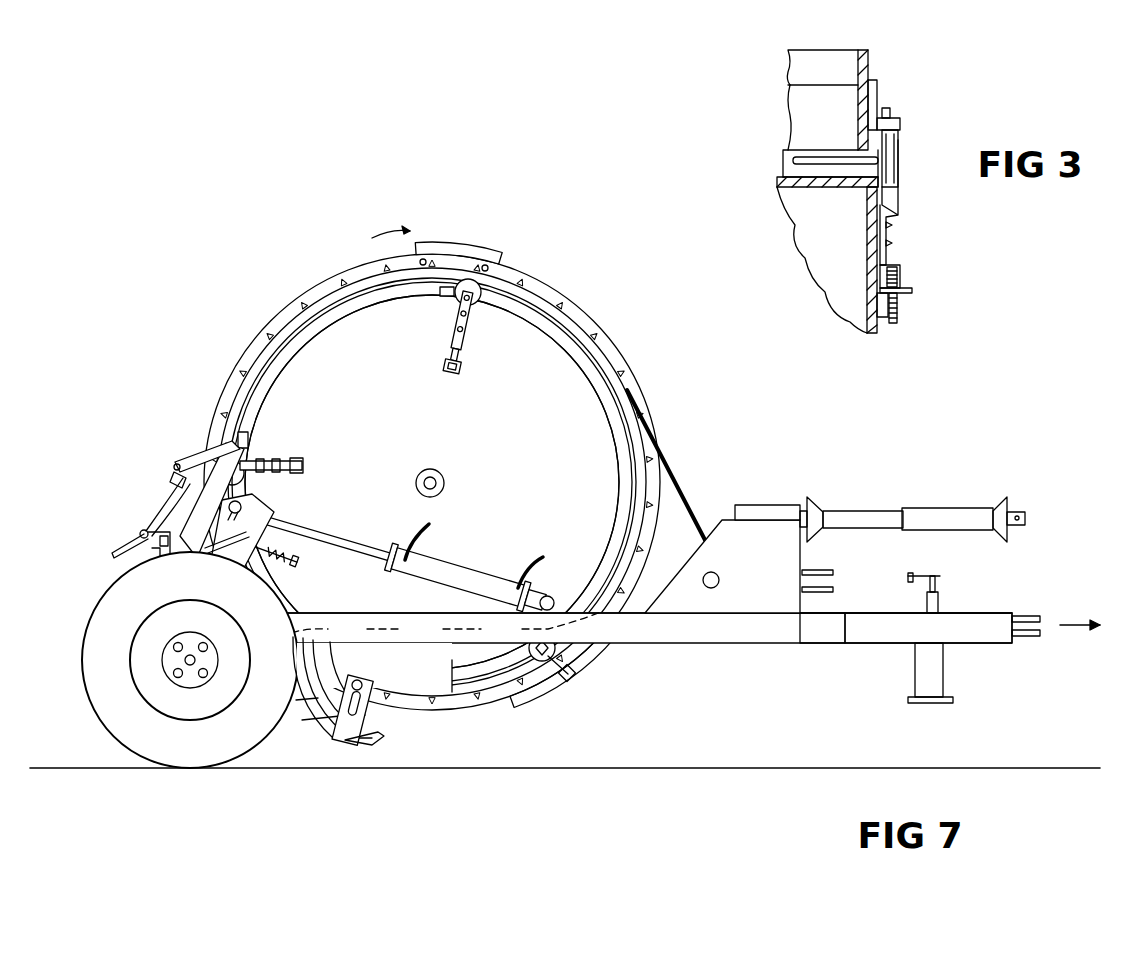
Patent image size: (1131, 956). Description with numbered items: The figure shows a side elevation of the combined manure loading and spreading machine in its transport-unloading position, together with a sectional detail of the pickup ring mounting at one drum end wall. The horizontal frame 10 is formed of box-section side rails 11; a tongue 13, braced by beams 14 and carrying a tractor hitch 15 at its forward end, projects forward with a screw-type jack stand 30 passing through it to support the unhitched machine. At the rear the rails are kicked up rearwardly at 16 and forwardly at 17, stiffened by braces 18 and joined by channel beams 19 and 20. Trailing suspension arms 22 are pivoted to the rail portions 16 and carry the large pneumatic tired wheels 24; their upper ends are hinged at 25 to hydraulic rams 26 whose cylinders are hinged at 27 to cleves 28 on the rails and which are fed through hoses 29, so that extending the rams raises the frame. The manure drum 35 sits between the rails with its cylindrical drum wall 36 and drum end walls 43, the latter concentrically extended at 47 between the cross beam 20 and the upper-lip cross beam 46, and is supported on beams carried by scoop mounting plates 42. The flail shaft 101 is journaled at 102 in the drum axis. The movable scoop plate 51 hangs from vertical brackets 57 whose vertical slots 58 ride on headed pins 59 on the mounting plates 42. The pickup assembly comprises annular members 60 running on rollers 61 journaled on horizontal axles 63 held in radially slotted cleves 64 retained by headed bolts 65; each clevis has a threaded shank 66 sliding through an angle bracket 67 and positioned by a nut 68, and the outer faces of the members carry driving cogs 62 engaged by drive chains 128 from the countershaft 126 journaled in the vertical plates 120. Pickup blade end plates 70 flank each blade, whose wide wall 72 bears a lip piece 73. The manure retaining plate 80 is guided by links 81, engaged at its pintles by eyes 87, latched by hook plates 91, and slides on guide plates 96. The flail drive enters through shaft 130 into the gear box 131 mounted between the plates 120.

In FIG. 7, the horizontal frame 10 is at (744, 636).
In FIG. 7, the side rails 11 is at (686, 644).
In FIG. 7, the tongue 13 is at (980, 645).
In FIG. 7, the beams 14 is at (832, 645).
In FIG. 7, the tractor hitch 15 is at (1030, 613).
In FIG. 7, the rearwardly kicked-up rail portions 16 is at (186, 553).
In FIG. 7, the forwardly kicked-up rail portions 17 is at (215, 512).
In FIG. 7, the braces 18 is at (204, 545).
In FIG. 7, the channel beam 19 is at (158, 552).
In FIG. 7, the channel beam 20 is at (250, 441).
In FIG. 7, the trailing suspension arms 22 is at (835, 588).
In FIG. 7, the pneumatic tired wheels 24 is at (88, 637).
In FIG. 7, the hinge 25 is at (246, 509).
In FIG. 7, the hydraulic rams 26 is at (436, 585).
In FIG. 7, the hinge 27 is at (553, 599).
In FIG. 7, the cleves 28 is at (538, 592).
In FIG. 7, the hoses 29 is at (535, 572).
In FIG. 7, the screw-type jack stand 30 is at (940, 600).
In FIG. 7, the manure drum 35 is at (531, 427).
In FIG. 7, the cylindrical drum wall 36 is at (618, 476).
In FIG. 3, the cylindrical drum wall 36 is at (812, 188).
In FIG. 7, the scoop mounting plates 42 is at (417, 638).
In FIG. 7, the drum end walls 43 is at (546, 338).
In FIG. 3, the drum end walls 43 is at (867, 277).
In FIG. 7, the cross beam 46 is at (448, 290).
In FIG. 7, the concentric extensions of end walls 47 is at (352, 298).
In FIG. 7, the movable scoop plate 51 is at (318, 720).
In FIG. 7, the vertical brackets 57 is at (352, 742).
In FIG. 7, the vertical slots 58 is at (370, 708).
In FIG. 7, the headed pins 59 is at (365, 683).
In FIG. 7, the annular members 60 is at (288, 302).
In FIG. 3, the annular members 60 is at (878, 96).
In FIG. 7, the rollers 61 is at (482, 287).
In FIG. 3, the rollers 61 is at (899, 141).
In FIG. 7, the driving cogs 62 is at (322, 302).
In FIG. 3, the driving cogs 62 is at (893, 114).
In FIG. 7, the horizontal axle 63 is at (474, 302).
In FIG. 3, the horizontal axle 63 is at (845, 158).
In FIG. 7, the cleves 64 is at (456, 318).
In FIG. 3, the cleves 64 is at (900, 209).
In FIG. 3, the headed bolts 65 is at (892, 225).
In FIG. 3, the threaded shank 66 is at (898, 318).
In FIG. 7, the angle bracket 67 is at (462, 366).
In FIG. 3, the angle bracket 67 is at (913, 291).
In FIG. 3, the nut 68 is at (900, 281).
In FIG. 7, the pickup blade end plates 70 is at (470, 252).
In FIG. 3, the pickup blade end plates 70 is at (869, 69).
In FIG. 3, the wide wall 72 is at (790, 124).
In FIG. 3, the lip piece 73 is at (793, 71).
In FIG. 7, the manure retaining plate 80 is at (170, 492).
In FIG. 7, the links 81 is at (208, 453).
In FIG. 7, the eyes 87 is at (140, 531).
In FIG. 7, the hook plates 91 is at (178, 478).
In FIG. 7, the guide plates 96 is at (125, 548).
In FIG. 7, the flail shaft 101 is at (438, 475).
In FIG. 7, the journal 102 is at (444, 486).
In FIG. 7, the vertical plates 120 is at (683, 567).
In FIG. 7, the countershaft 126 is at (721, 581).
In FIG. 7, the drive chains 128 is at (675, 483).
In FIG. 7, the shaft 130 is at (936, 508).
In FIG. 7, the gear box 131 is at (766, 505).